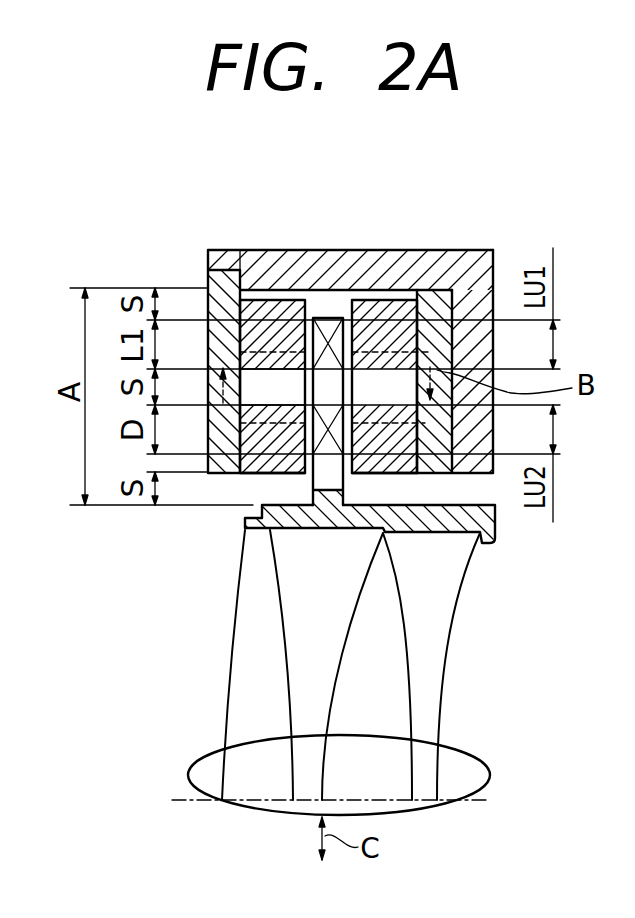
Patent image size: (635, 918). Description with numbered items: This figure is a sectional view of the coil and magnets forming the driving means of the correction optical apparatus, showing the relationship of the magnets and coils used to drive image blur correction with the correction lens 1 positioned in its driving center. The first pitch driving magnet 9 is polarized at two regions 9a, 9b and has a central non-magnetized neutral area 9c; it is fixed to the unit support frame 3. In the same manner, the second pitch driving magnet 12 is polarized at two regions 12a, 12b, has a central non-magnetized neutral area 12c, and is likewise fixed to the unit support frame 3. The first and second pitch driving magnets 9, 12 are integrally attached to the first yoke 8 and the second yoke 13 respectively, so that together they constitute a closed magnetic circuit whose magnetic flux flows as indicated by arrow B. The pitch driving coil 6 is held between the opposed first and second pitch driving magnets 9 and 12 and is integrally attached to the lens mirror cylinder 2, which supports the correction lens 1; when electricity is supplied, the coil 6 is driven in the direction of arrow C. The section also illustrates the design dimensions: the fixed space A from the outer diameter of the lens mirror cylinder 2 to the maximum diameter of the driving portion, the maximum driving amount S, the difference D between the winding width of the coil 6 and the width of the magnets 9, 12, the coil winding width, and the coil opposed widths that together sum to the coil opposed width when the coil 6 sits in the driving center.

The correction lens 1 is at (485, 768).
The lens mirror cylinder 2 is at (498, 530).
The unit support frame 3 is at (236, 258).
The pitch driving coil 6 is at (328, 318).
The first yoke 8 is at (460, 266).
The first pitch driving magnet 9 is at (387, 333).
The polarized portion of first pitch driving magnet 9a is at (425, 297).
The polarized portion of first pitch driving magnet 9b is at (371, 470).
The central non-magnetized neutral area 9c is at (377, 300).
The second pitch driving magnet 12 is at (275, 326).
The polarized portion of second pitch driving magnet 12a is at (278, 300).
The polarized portion of second pitch driving magnet 12b is at (245, 472).
The central non-magnetized neutral area 12c is at (285, 382).
The second yoke 13 is at (207, 266).